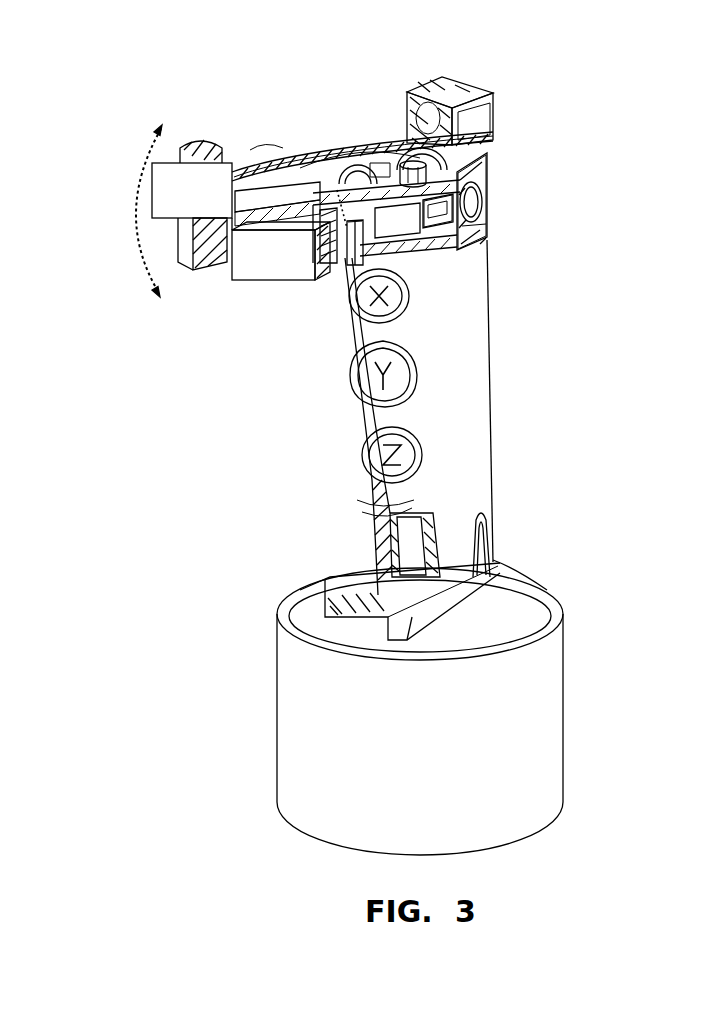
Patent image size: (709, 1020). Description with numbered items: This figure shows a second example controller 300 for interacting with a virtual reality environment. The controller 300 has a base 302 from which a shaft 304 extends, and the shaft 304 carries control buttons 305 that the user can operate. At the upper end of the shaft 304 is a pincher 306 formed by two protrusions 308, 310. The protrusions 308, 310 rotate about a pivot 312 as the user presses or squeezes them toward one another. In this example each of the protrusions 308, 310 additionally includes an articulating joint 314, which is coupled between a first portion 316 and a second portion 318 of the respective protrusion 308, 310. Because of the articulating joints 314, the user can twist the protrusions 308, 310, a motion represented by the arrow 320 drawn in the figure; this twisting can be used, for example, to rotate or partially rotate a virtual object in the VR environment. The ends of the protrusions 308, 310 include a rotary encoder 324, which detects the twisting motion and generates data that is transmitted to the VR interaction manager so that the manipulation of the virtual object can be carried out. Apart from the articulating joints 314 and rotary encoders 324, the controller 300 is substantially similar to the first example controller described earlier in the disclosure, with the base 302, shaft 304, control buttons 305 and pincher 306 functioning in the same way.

The controller 300 is at (118, 73).
The base 302 is at (256, 689).
The shaft 304 is at (511, 327).
The control buttons 305 is at (392, 322).
The pincher 306 is at (512, 79).
The protrusion 308 is at (544, 204).
The protrusion 310 is at (386, 111).
The pivot 312 is at (488, 146).
The articulating joint 314 is at (331, 181).
The first portion 316 is at (283, 148).
The second portion 318 is at (395, 147).
The arrow 320 is at (150, 299).
The rotary encoder 324 is at (175, 199).